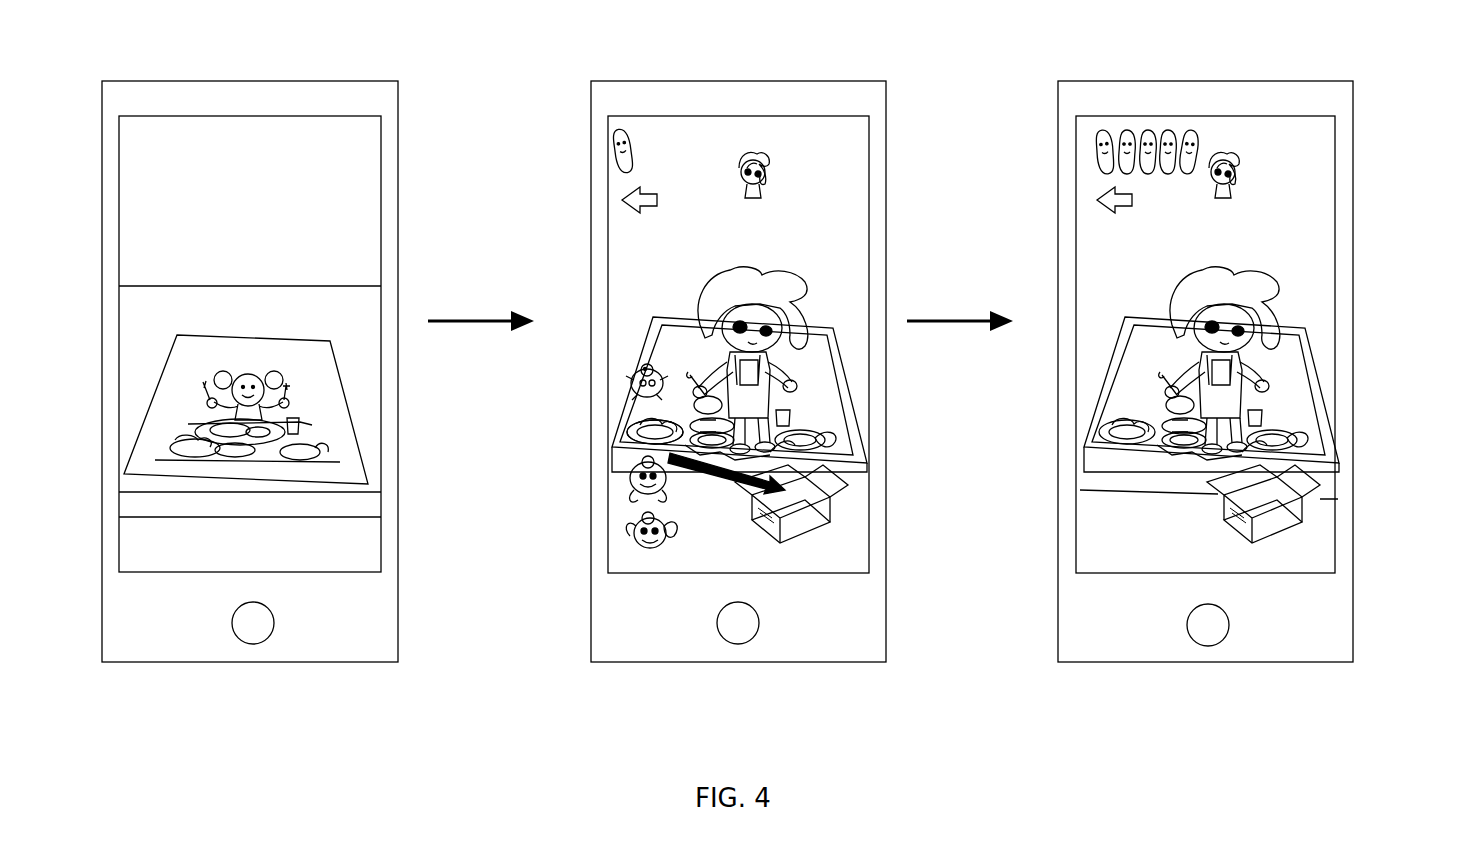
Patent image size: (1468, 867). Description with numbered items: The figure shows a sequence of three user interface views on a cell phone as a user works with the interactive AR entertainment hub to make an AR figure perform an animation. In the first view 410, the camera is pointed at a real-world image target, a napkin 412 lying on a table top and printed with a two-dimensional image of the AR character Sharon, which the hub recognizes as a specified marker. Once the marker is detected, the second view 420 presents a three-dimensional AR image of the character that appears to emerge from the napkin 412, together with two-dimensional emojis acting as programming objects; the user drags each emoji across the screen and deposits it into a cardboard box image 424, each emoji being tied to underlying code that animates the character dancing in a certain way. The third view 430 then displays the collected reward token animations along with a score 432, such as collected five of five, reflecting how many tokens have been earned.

The view 410 is at (127, 60).
The napkin 412 is at (324, 420).
The view 420 is at (624, 60).
The cardboard box image 424 is at (800, 507).
The view 430 is at (1086, 60).
The score 432 is at (1318, 170).